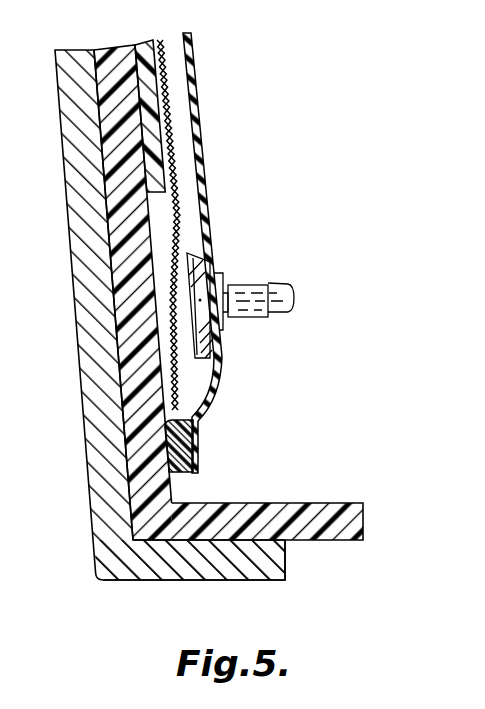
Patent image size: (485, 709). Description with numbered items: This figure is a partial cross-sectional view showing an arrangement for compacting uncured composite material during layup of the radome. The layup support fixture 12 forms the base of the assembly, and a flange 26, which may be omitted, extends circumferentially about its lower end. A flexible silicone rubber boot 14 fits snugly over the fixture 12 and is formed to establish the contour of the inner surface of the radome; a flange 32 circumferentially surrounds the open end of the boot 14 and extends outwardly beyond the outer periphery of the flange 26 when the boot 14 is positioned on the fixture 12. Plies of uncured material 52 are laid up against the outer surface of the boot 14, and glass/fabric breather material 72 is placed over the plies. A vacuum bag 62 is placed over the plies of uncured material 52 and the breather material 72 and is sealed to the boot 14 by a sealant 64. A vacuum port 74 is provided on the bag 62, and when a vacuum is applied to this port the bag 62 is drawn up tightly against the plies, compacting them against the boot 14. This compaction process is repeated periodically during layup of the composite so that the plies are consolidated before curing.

The layup support fixture 12 is at (82, 443).
The flexible boot 14 is at (115, 47).
The flange 26 is at (287, 569).
The flange 32 is at (362, 521).
The plies of uncured material 52 is at (140, 43).
The vacuum bag 62 is at (203, 131).
The sealant 64 is at (185, 471).
The glass/fabric breather material 72 is at (176, 208).
The vacuum port 74 is at (223, 327).